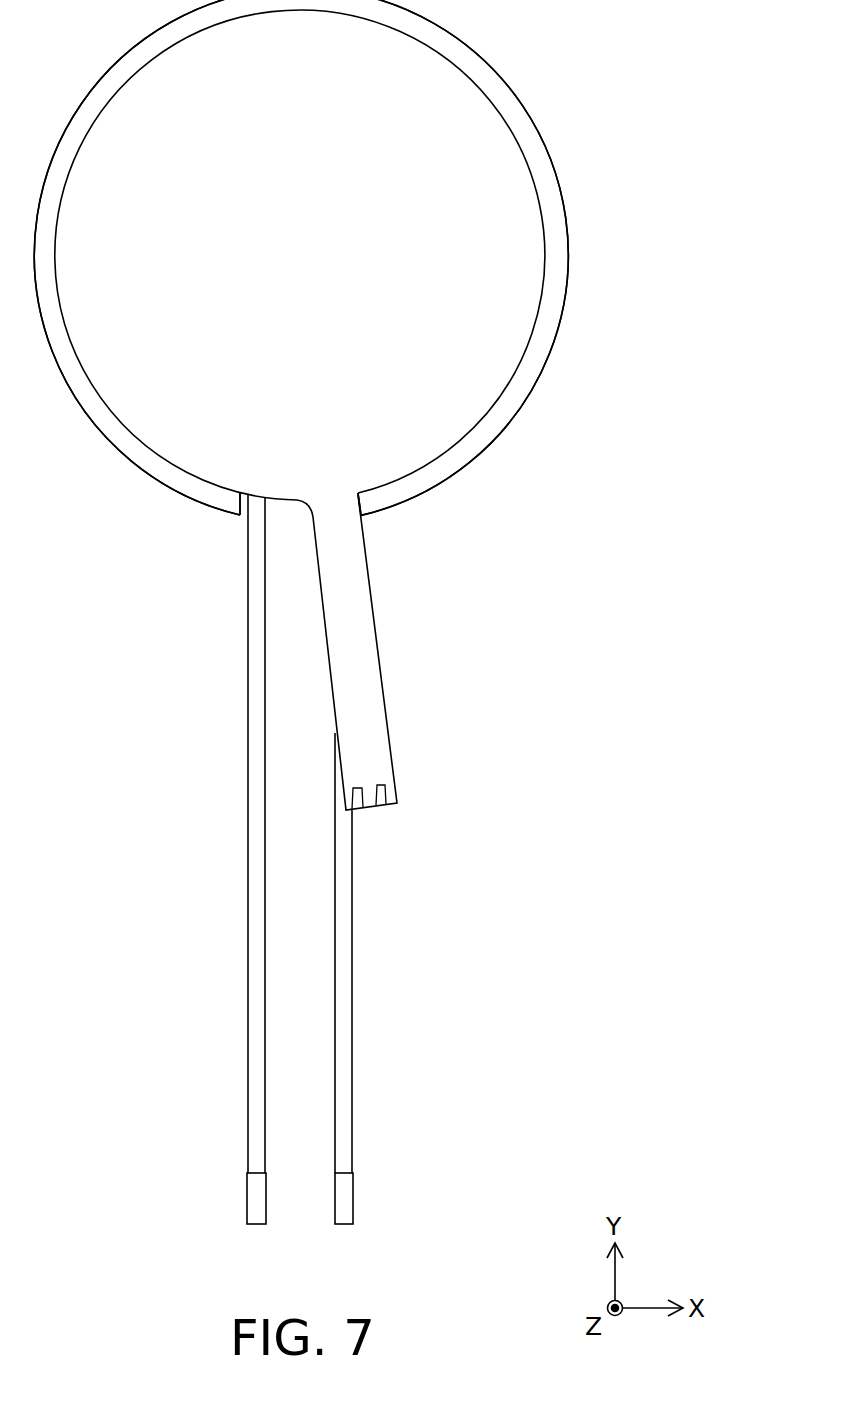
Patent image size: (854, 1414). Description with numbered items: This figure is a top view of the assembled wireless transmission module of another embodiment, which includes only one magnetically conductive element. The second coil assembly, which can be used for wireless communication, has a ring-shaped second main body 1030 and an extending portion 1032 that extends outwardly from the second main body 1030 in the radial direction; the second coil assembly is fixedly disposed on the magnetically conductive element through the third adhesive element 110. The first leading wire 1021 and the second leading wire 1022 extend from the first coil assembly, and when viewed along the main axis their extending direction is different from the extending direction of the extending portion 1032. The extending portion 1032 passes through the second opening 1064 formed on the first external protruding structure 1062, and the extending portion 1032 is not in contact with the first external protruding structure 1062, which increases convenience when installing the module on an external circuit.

The third adhesive element 110 is at (482, 435).
The second main body 1030 is at (458, 236).
The extending portion 1032 is at (358, 671).
The first external protruding structure 1062 is at (437, 482).
The second opening 1064 is at (245, 512).
The first leading wire 1021 is at (255, 1030).
The second leading wire 1022 is at (347, 1030).